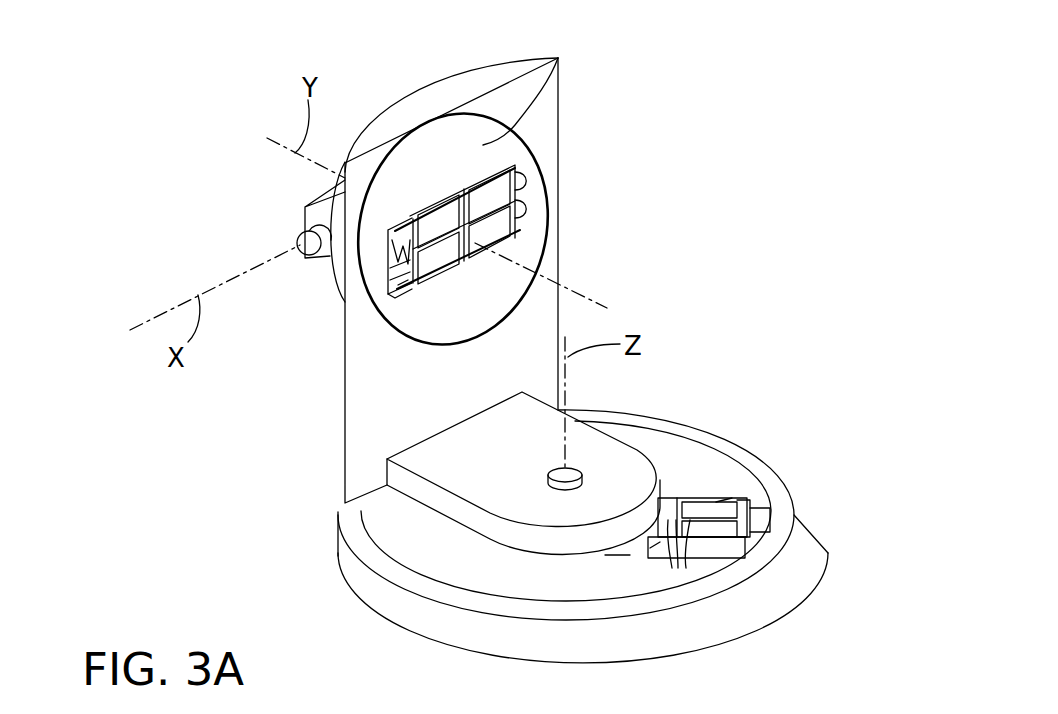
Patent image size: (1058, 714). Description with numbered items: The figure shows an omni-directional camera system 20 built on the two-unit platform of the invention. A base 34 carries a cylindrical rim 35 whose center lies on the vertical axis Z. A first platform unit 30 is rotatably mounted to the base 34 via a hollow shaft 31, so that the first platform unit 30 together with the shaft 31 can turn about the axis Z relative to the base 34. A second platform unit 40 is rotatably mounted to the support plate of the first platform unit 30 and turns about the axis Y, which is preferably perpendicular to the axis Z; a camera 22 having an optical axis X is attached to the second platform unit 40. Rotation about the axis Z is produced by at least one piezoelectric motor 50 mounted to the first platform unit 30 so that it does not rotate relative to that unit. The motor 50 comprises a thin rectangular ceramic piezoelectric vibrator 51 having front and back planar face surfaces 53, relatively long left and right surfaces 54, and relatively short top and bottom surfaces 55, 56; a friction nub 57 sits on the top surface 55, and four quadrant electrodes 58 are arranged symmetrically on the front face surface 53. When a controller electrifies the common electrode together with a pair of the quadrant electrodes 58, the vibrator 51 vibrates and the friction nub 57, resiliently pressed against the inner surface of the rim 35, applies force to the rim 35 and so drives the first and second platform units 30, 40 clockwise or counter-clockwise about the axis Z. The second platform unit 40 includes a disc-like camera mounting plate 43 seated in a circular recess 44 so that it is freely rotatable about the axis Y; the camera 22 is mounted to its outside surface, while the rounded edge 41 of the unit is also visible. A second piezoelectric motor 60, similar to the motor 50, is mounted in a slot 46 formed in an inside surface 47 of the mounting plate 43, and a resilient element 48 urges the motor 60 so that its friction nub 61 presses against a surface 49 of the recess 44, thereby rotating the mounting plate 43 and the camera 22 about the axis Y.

The omni-directional camera system 20 is at (708, 173).
The camera 22 is at (315, 197).
The first platform unit 30 is at (641, 463).
The hollow shaft 31 is at (574, 468).
The base 34 is at (420, 558).
The cylindrical rim 35 is at (347, 553).
The second platform unit 40 is at (580, 105).
The rounded edge of support plate 41 is at (368, 118).
The camera mounting plate 43 is at (336, 268).
The circular recess 44 is at (540, 228).
The slot 46 is at (395, 228).
The inside surface 47 is at (558, 58).
The resilient element 48 is at (393, 278).
The surface of the recess 49 is at (527, 180).
The piezoelectric motor 50 is at (870, 572).
The piezoelectric vibrator 51 is at (745, 507).
The front and back planar face surfaces 53 is at (750, 560).
The left and right surfaces 54 is at (716, 500).
The top surface 55 is at (765, 512).
The bottom surface 56 is at (605, 553).
The friction nub 57 is at (712, 528).
The quadrant electrodes 58 is at (672, 558).
The piezoelectric motor 60 is at (407, 285).
The friction nub 61 is at (522, 200).